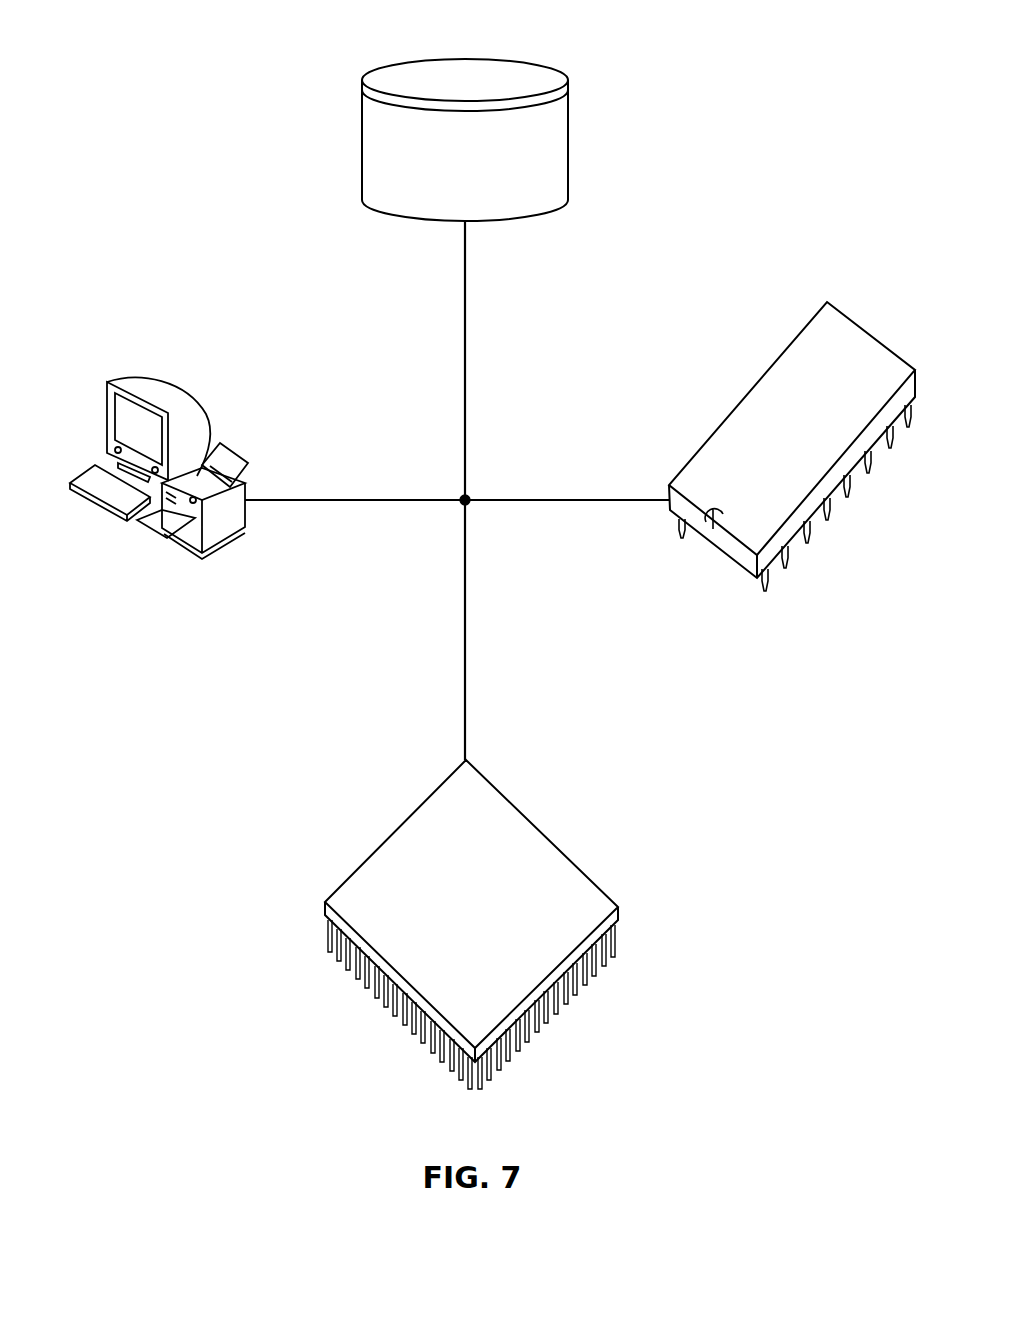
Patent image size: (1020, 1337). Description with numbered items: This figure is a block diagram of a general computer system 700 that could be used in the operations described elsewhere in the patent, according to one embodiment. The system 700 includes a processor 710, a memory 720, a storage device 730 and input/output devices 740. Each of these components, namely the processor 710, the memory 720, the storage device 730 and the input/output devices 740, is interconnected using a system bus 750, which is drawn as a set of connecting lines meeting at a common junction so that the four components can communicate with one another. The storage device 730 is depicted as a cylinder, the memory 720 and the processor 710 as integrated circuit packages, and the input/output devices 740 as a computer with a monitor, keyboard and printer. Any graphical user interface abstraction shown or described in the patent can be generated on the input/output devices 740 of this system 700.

The general computer system 700 is at (131, 166).
The processor 710 is at (392, 834).
The memory 720 is at (744, 397).
The storage device 730 is at (460, 58).
The input/output devices 740 is at (107, 382).
The system bus 750 is at (368, 500).